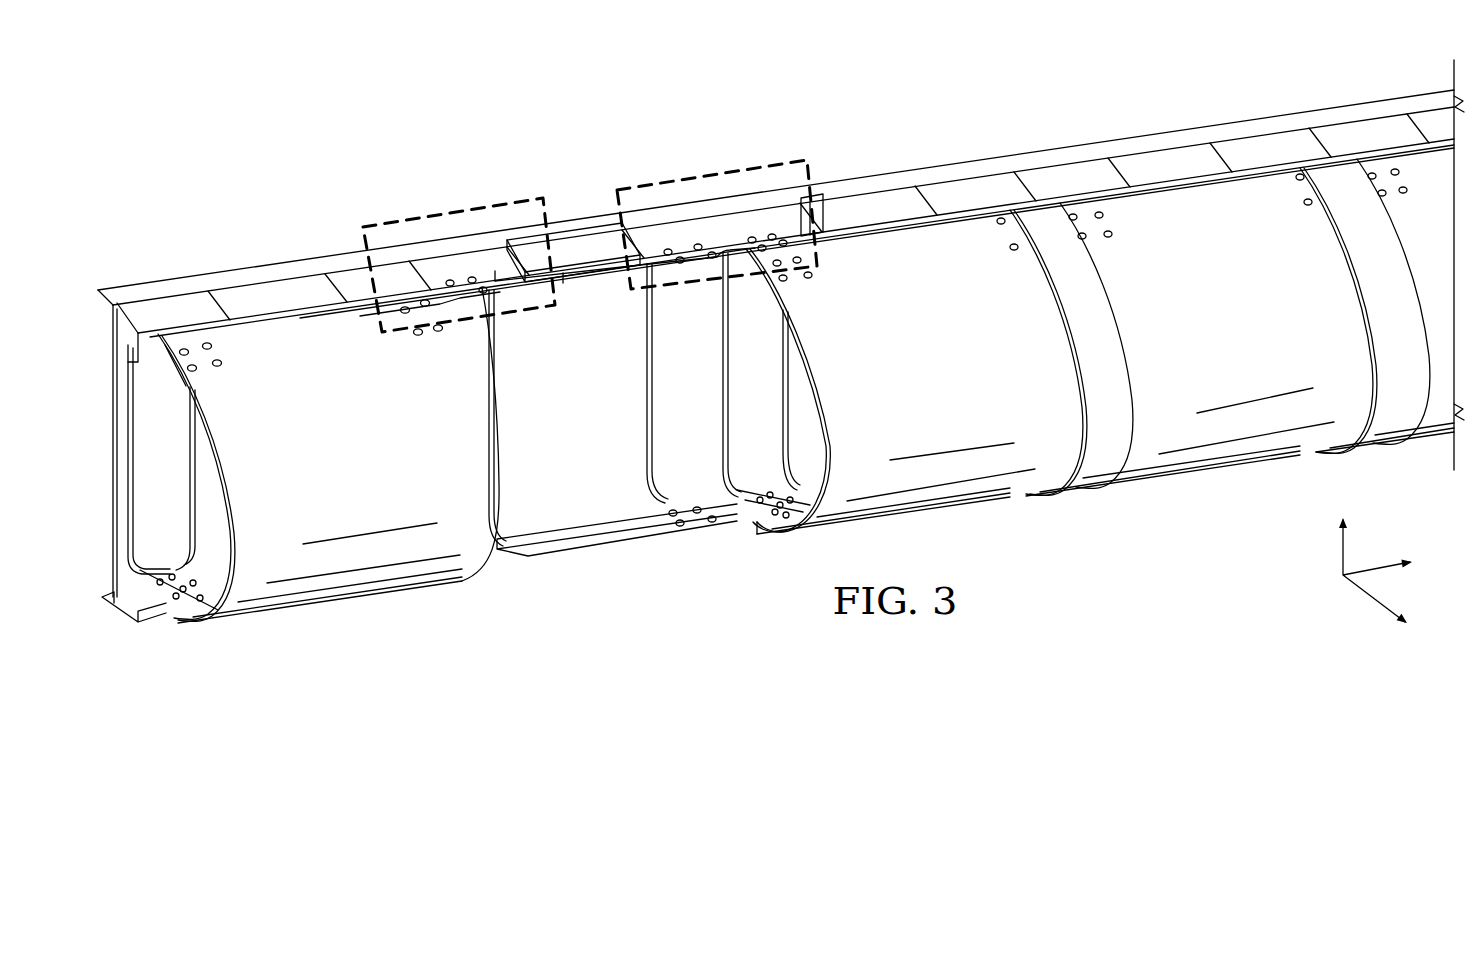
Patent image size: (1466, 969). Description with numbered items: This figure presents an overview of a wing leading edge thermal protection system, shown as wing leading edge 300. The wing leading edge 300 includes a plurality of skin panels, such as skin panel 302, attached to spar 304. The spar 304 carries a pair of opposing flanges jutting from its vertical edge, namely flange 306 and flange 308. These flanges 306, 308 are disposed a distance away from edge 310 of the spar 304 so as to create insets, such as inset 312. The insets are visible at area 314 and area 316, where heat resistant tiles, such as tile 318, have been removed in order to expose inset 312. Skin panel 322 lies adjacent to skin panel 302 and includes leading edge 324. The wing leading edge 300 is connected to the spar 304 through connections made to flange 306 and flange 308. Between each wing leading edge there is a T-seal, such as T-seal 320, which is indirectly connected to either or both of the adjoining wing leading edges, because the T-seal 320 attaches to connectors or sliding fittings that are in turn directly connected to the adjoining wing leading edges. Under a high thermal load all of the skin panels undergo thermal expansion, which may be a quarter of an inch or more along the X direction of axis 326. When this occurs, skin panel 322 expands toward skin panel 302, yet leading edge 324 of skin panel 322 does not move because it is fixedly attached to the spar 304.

The wing leading edge 300 is at (603, 88).
The skin panel 302 is at (1185, 205).
The spar 304 is at (900, 166).
The flange 306 is at (577, 287).
The flange 308 is at (586, 527).
The edge 310 is at (577, 218).
The inset 312 is at (717, 222).
The area 314 is at (747, 160).
The area 316 is at (451, 208).
The tile 318 is at (272, 290).
The T-seal 320 is at (1125, 398).
The skin panel 322 is at (960, 490).
The leading edge 324 is at (804, 390).
The axis 326 is at (1345, 620).